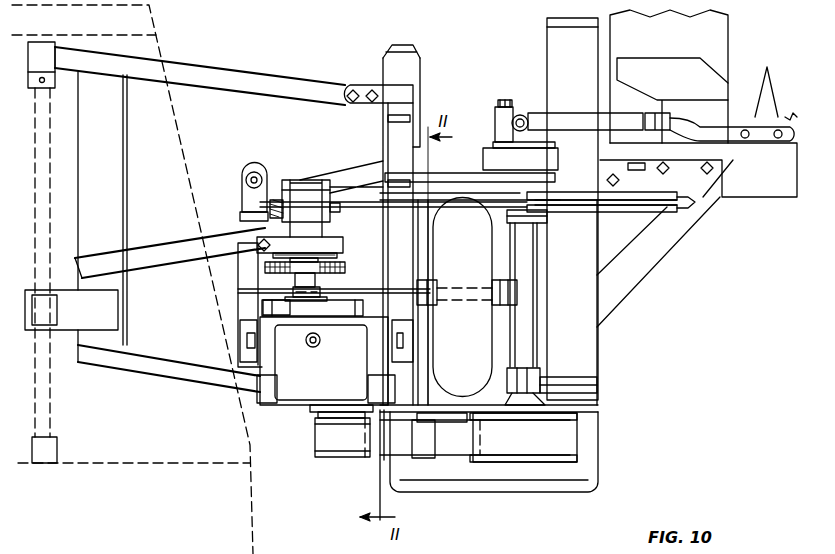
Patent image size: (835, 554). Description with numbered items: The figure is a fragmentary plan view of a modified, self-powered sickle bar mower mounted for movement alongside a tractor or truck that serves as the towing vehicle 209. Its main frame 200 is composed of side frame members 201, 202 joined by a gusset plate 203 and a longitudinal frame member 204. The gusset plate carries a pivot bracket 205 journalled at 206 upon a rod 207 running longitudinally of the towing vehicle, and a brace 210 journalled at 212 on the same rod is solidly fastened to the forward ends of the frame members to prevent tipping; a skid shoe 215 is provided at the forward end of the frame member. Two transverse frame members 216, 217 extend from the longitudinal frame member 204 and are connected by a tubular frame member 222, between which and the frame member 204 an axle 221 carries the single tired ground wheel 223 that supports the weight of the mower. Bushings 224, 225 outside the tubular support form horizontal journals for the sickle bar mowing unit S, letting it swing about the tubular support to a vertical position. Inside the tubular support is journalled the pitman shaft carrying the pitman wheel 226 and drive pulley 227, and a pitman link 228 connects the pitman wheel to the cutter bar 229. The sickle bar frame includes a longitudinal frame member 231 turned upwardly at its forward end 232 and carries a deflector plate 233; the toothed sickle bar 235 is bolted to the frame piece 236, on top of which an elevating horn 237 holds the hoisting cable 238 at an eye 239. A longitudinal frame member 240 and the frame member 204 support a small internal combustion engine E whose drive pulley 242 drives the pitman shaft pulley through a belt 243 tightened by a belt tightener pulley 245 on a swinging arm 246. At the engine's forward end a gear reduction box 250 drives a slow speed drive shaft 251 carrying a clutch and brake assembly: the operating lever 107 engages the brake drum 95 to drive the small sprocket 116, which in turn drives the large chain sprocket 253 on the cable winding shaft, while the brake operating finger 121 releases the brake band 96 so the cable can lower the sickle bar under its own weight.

The brake drum 95 is at (272, 255).
The brake band 96 is at (341, 240).
The operating lever 107 is at (271, 205).
The small sprocket 116 is at (292, 272).
The brake operating finger 121 is at (240, 220).
The main frame 200 is at (178, 380).
The side frame member 201 is at (140, 362).
The side frame member 202 is at (162, 245).
The gusset plate 203 is at (130, 281).
The longitudinal frame member 204 is at (392, 244).
The pivot bracket 205 is at (64, 330).
The journal 206 is at (56, 290).
The rod 207 is at (47, 190).
The towing vehicle 209 is at (189, 149).
The brace 210 is at (233, 75).
The journal 212 is at (50, 58).
The skid shoe 215 is at (412, 68).
The transverse frame member 216 is at (449, 177).
The transverse frame member 217 is at (600, 407).
The axle 221 is at (475, 300).
The tubular frame member 222 is at (528, 253).
The ground wheel 223 is at (482, 322).
The bushing 224 is at (534, 368).
The bushing 225 is at (512, 222).
The pitman wheel 226 is at (490, 155).
The drive pulley 227 is at (535, 450).
The pitman link 228 is at (575, 125).
The cutter bar 229 is at (678, 128).
The longitudinal frame member 231 is at (600, 345).
The forward end 232 is at (574, 28).
The deflector plate 233 is at (713, 30).
The toothed sickle bar 235 is at (779, 183).
The frame piece 236 is at (714, 200).
The elevating horn 237 is at (657, 188).
The hoisting cable 238 is at (623, 205).
The eye 239 is at (692, 204).
The longitudinal frame member 240 is at (243, 267).
The drive pulley 242 is at (327, 455).
The belt 243 is at (376, 447).
The belt tightener pulley 245 is at (425, 450).
The swinging arm 246 is at (440, 412).
The gear reduction box 250 is at (263, 306).
The slow speed drive shaft 251 is at (317, 282).
The large chain sprocket 253 is at (346, 266).
The internal combustion engine E is at (300, 380).
The sickle bar mowing unit S is at (658, 243).